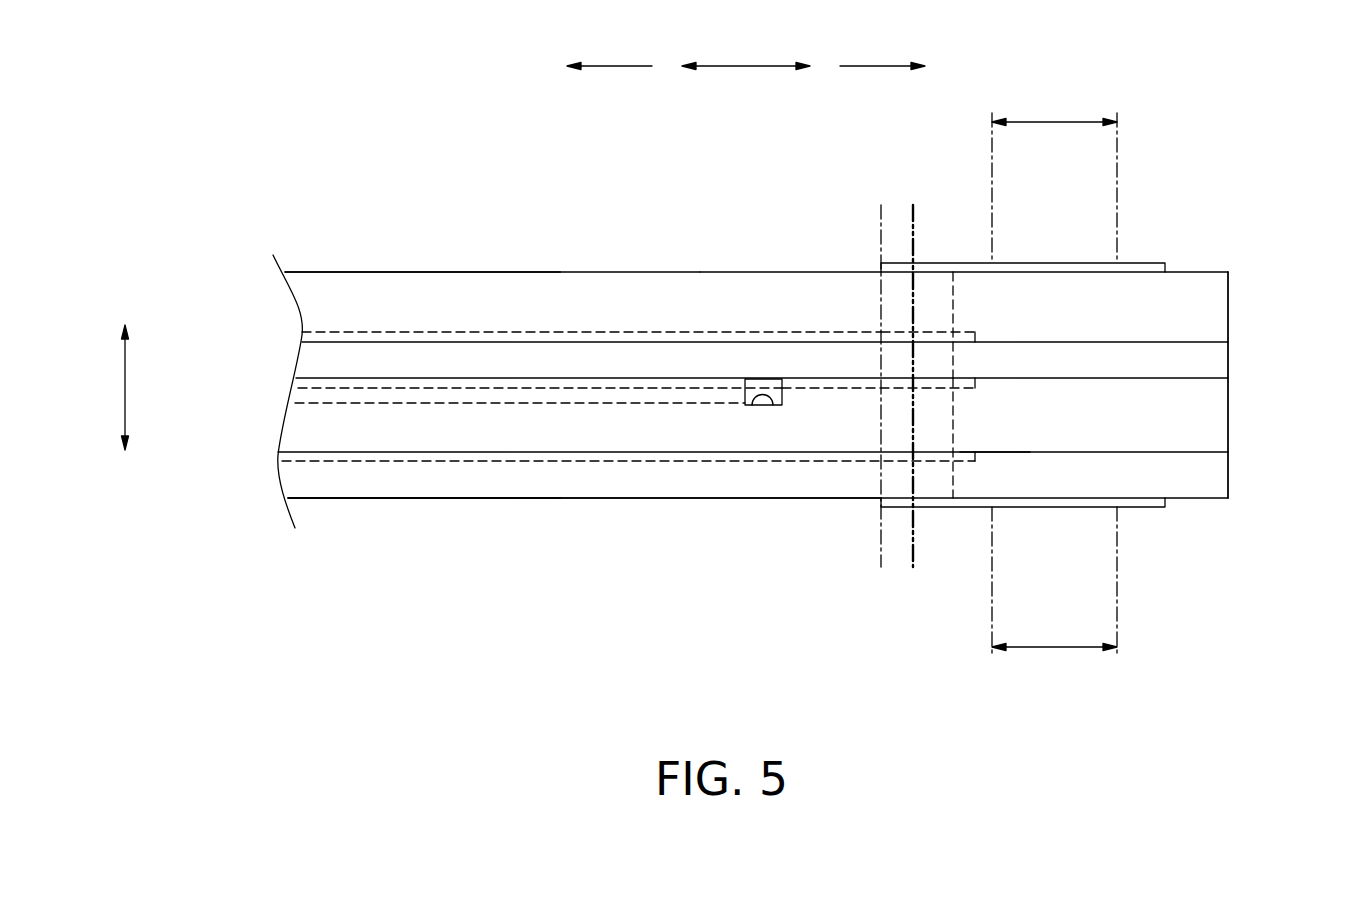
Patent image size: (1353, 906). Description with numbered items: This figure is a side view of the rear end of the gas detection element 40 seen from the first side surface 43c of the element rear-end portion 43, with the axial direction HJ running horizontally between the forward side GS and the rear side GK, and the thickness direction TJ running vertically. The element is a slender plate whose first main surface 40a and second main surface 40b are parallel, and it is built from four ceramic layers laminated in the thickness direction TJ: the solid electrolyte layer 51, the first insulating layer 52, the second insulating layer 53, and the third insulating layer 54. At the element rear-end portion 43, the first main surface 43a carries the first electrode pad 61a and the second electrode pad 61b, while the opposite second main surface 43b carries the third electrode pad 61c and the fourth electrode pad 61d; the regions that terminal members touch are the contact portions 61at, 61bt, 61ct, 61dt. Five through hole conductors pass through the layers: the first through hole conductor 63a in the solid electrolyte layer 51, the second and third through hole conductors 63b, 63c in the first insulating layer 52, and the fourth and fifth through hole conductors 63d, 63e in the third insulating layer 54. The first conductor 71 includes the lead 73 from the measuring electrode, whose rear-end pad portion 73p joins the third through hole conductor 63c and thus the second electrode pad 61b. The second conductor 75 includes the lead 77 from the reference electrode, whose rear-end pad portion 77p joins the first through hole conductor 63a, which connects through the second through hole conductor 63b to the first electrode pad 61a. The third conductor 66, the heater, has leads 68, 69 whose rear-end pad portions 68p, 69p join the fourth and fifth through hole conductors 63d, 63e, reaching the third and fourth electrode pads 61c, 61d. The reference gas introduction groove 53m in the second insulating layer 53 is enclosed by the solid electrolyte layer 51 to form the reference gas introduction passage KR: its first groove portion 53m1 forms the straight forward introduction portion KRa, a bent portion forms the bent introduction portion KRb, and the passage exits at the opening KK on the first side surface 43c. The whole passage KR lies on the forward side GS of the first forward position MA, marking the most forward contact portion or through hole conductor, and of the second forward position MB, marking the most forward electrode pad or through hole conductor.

The gas detection element 40 is at (1214, 158).
The first main surface 40a is at (335, 272).
The second main surface 40b is at (412, 498).
The element rear-end portion 43 is at (653, 278).
The first main surface 43a is at (565, 275).
The second main surface 43b is at (475, 498).
The first side surface 43c is at (733, 278).
The solid electrolyte layer 51 is at (307, 360).
The first insulating layer 52 is at (307, 298).
The second insulating layer 53 is at (307, 422).
The third insulating layer 54 is at (307, 482).
The reference gas introduction groove 53m is at (383, 398).
The first groove portion 53m1 is at (520, 510).
The first electrode pad 61a is at (1023, 216).
The second electrode pad 61b is at (1012, 263).
The third electrode pad 61c is at (1029, 560).
The fourth electrode pad 61d is at (1147, 507).
The contact portion 61at is at (1054, 175).
The contact portion 61bt is at (1054, 175).
The contact portion 61ct is at (1054, 595).
The contact portion 61dt is at (1054, 595).
The first through hole conductor 63a is at (940, 355).
The second through hole conductor 63b is at (946, 251).
The third through hole conductor 63c is at (928, 303).
The fourth through hole conductor 63d is at (960, 500).
The fifth through hole conductor 63e is at (935, 497).
The third conductor 66 is at (817, 462).
The lead 68 is at (628, 538).
The lead 69 is at (628, 538).
The rear-end pad portion 68p is at (1009, 525).
The rear-end pad portion 69p is at (963, 452).
The first conductor 71 is at (422, 333).
The lead 73 is at (591, 245).
The rear-end pad portion 73p is at (902, 332).
The second conductor 75 is at (530, 389).
The lead 77 is at (540, 506).
The rear-end pad portion 77p is at (975, 388).
The reference gas introduction passage KR is at (587, 414).
The forward introduction portion KRa is at (461, 383).
The bent introduction portion KRb is at (689, 413).
The opening KK is at (773, 405).
The forward side GS is at (609, 49).
The axial direction HJ is at (746, 49).
The rear side GK is at (882, 49).
The thickness direction TJ is at (106, 387).
The first forward position MA is at (913, 560).
The second forward position MB is at (878, 543).